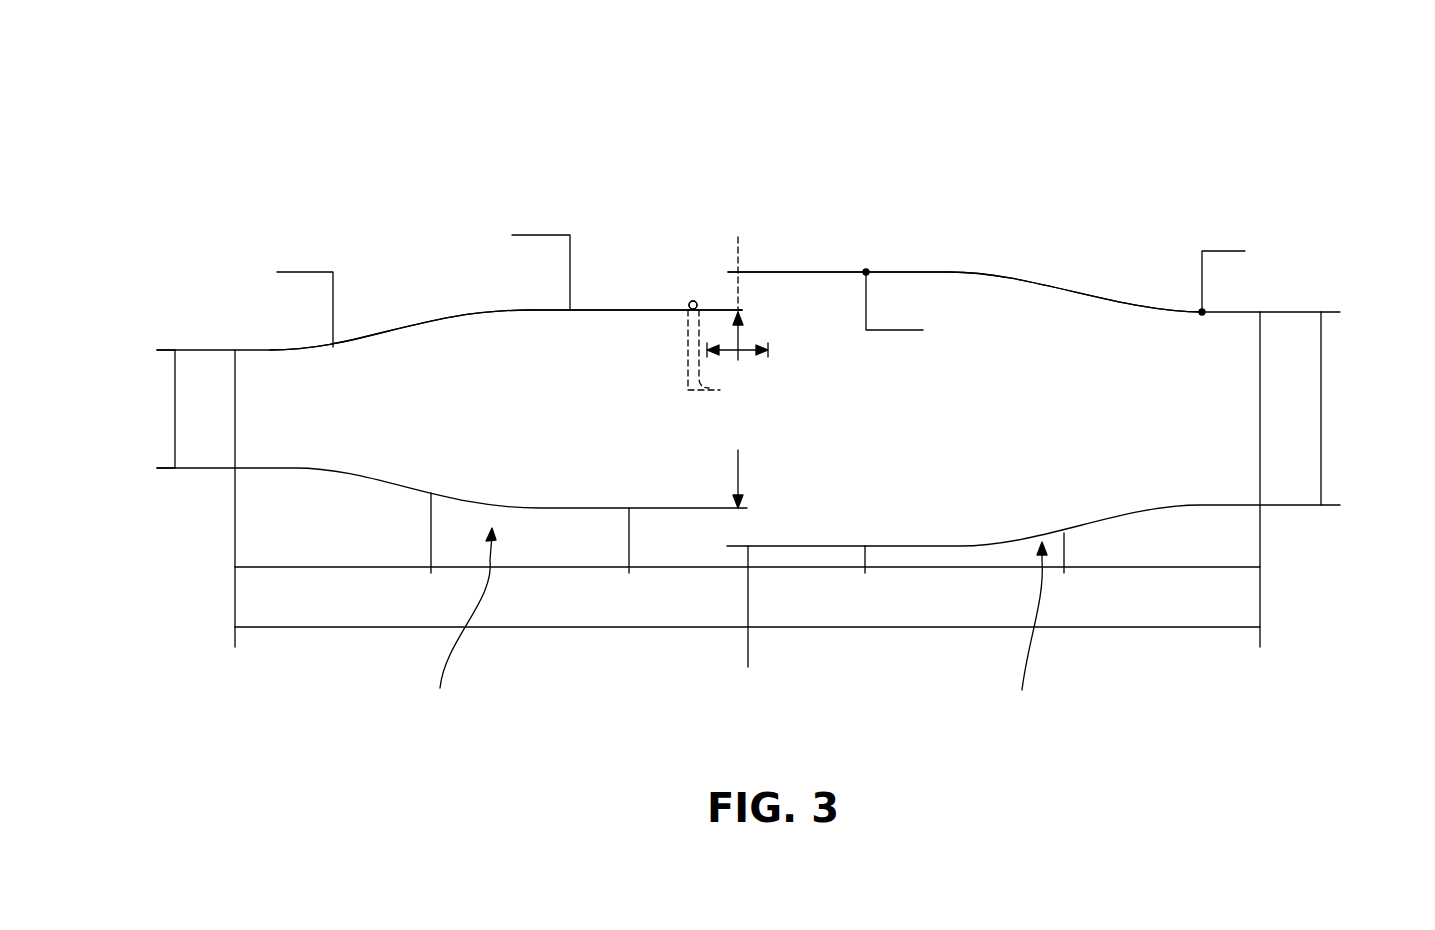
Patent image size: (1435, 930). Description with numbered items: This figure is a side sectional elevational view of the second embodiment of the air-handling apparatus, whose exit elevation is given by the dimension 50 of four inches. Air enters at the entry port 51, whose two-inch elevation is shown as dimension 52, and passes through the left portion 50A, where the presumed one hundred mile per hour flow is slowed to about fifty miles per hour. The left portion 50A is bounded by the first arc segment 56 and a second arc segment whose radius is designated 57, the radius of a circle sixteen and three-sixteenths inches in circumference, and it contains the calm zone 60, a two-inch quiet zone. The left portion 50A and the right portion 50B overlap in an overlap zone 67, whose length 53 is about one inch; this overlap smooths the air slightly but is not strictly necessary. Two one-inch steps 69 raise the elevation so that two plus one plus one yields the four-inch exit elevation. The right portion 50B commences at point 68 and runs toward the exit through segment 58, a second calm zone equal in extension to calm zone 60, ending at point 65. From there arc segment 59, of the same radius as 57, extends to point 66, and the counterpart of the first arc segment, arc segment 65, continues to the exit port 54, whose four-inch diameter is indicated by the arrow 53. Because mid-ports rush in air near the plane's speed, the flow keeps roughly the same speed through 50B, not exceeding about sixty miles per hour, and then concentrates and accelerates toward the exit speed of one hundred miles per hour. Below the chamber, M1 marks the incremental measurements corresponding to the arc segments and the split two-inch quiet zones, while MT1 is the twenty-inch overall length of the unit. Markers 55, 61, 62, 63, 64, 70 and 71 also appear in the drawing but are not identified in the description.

The elevation dimension 50 is at (738, 238).
The left portion 50A is at (499, 405).
The right portion 50B is at (964, 405).
The entry port 51 is at (215, 410).
The entry port elevation dimension 52 is at (160, 428).
The dimension arrow 53 is at (740, 362).
The exit port 54 is at (1272, 410).
The wall surface 55 is at (440, 318).
The first arc segment 56 is at (215, 250).
The second arc segment radius 57 is at (452, 217).
The second calm zone 58 is at (828, 270).
The arc segment 59 is at (1022, 273).
The calm zone 60 is at (630, 307).
The inner boundary 61 is at (678, 360).
The pivot point 62 is at (692, 300).
The bottom boundary 63 is at (725, 388).
The outer boundary 64 is at (678, 320).
The arc segment 65 is at (1003, 343).
The point 66 is at (1202, 313).
The overlap zone 67 is at (745, 304).
The point of commencement 68 is at (740, 250).
The elevation step 69 is at (742, 282).
The direction arrow 70 is at (353, 327).
The direction arrow 71 is at (502, 297).
The incremental measurement M1 is at (205, 567).
The total length measurement MT1 is at (205, 627).